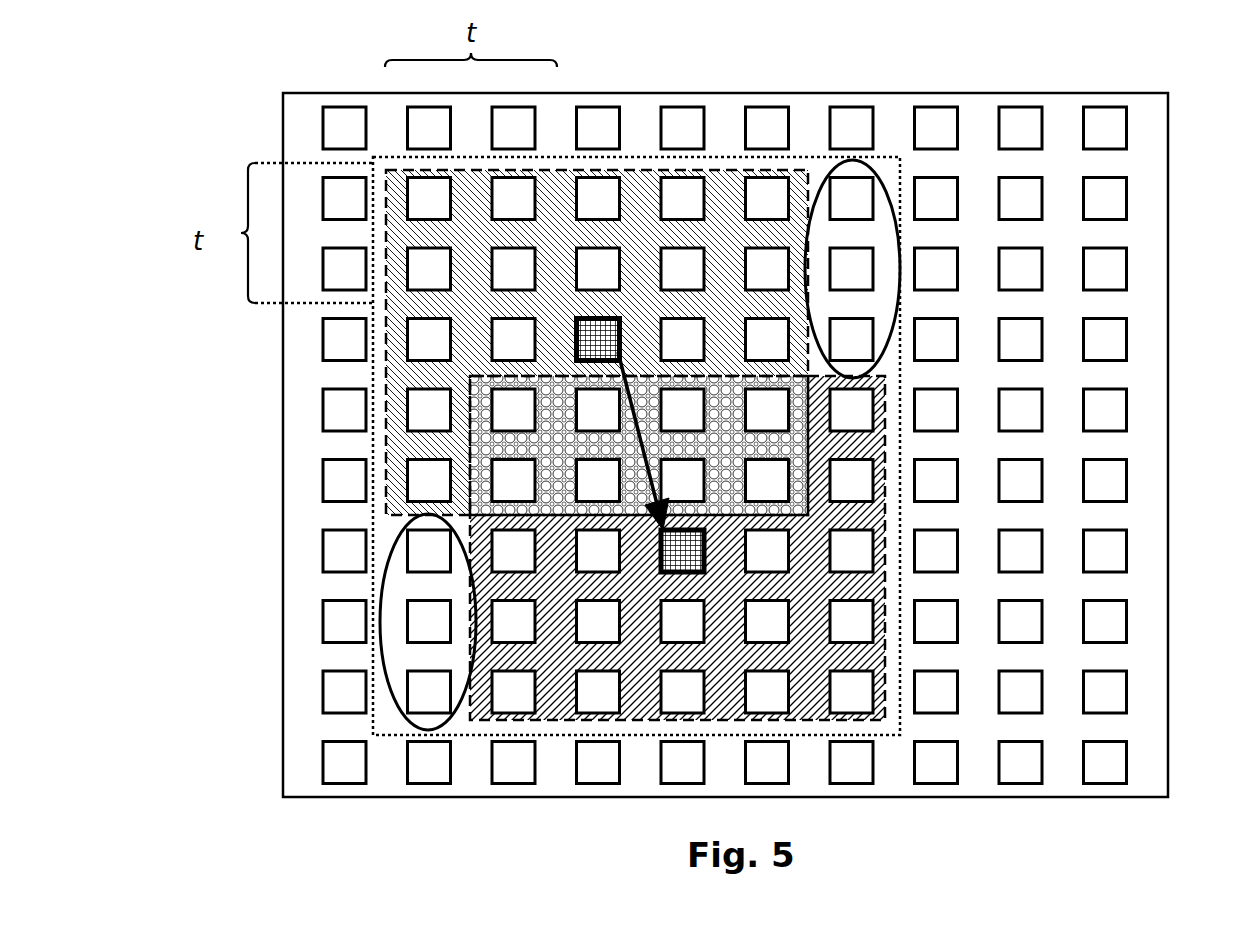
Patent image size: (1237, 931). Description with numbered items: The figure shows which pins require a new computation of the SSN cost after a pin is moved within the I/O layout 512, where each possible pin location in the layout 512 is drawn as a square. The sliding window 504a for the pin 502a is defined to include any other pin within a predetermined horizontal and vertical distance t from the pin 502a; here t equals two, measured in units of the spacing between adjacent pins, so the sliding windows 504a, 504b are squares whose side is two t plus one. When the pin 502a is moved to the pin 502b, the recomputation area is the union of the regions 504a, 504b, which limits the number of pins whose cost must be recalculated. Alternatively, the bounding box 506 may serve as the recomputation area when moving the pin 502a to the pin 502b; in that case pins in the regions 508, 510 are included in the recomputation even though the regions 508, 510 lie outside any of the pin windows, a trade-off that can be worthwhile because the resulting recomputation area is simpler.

The pin 502a is at (577, 321).
The pin 502b is at (702, 573).
The sliding window 504a is at (703, 220).
The sliding window 504b is at (900, 735).
The bounding box 506 is at (897, 228).
The region 508 is at (903, 240).
The region 510 is at (393, 703).
The layout 512 is at (1168, 308).